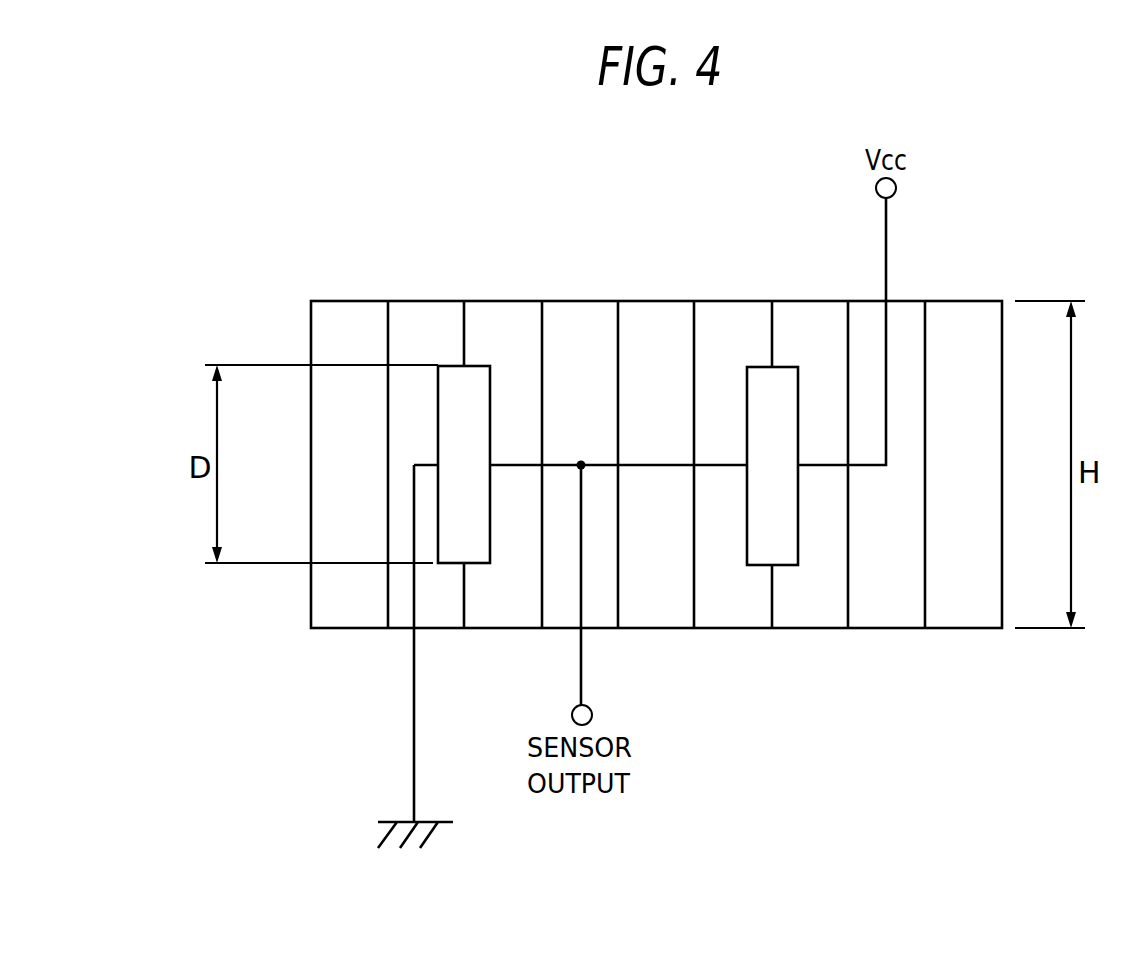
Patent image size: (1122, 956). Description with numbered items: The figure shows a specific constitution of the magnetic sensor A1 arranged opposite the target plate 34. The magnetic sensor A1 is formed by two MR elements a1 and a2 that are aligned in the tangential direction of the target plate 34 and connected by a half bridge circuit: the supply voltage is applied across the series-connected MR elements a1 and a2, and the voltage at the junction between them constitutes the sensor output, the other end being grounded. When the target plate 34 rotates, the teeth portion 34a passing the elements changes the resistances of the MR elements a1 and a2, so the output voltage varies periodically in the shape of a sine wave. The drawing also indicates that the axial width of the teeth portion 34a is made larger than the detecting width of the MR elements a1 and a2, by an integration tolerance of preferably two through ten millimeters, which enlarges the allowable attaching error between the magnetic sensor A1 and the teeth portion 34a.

The target plate 34 is at (318, 636).
The teeth portion 34a is at (350, 323).
The MR element a1 is at (758, 552).
The MR element a2 is at (477, 550).
The magnetic sensor A1 is at (796, 591).